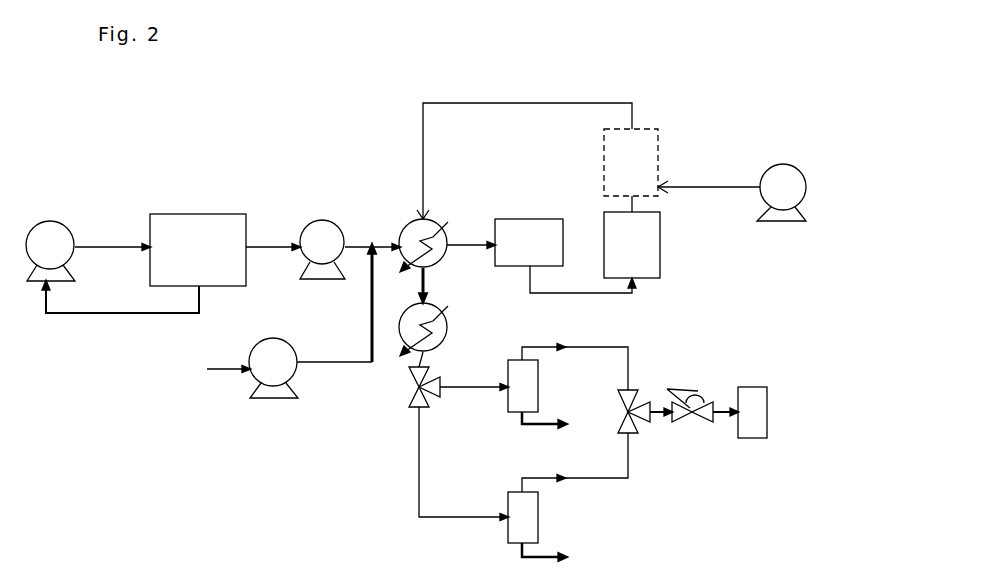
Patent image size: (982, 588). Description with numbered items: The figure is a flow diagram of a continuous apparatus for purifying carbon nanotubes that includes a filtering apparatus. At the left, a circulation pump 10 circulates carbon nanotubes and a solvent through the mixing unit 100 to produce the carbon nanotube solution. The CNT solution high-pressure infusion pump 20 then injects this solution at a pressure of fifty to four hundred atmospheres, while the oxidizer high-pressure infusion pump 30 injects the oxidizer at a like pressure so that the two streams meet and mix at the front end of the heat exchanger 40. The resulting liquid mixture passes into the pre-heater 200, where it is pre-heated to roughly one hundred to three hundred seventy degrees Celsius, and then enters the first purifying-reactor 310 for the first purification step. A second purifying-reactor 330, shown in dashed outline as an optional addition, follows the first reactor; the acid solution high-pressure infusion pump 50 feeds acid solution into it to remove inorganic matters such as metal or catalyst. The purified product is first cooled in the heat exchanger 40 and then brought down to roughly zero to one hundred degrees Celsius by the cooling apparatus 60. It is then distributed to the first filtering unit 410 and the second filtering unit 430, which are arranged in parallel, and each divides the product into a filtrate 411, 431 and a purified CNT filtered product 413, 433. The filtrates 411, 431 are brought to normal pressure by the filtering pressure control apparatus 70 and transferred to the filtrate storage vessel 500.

The circulation pump 10 is at (59, 224).
The mixing unit 100 is at (198, 214).
The CNT solution high-pressure infusion pump 20 is at (330, 220).
The oxidizer high-pressure infusion pump 30 is at (276, 339).
The heat exchanger 40 is at (435, 223).
The cooling apparatus 60 is at (434, 305).
The pre-heater 200 is at (530, 219).
The first purifying-reactor 310 is at (660, 246).
The second purifying-reactor 330 is at (659, 172).
The acid solution high-pressure infusion pump 50 is at (789, 165).
The first filtering unit 410 is at (538, 392).
The filtrate 411 is at (560, 347).
The purified CNT filtered product 413 is at (556, 424).
The second filtering unit 430 is at (538, 520).
The filtrate 431 is at (560, 478).
The purified CNT filtered product 433 is at (556, 557).
The filtering pressure control apparatus 70 is at (697, 391).
The filtrate storage vessel 500 is at (752, 387).